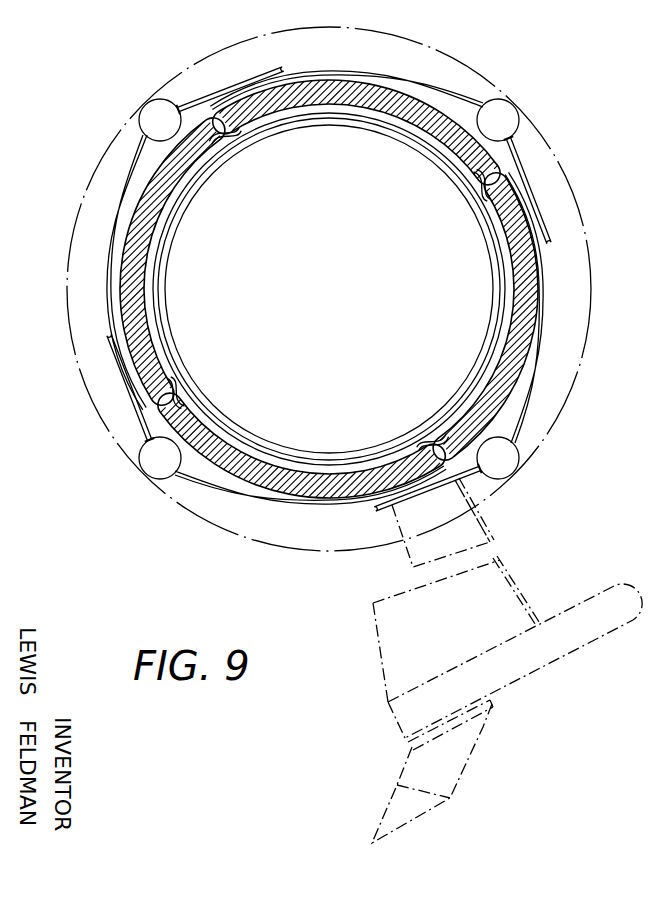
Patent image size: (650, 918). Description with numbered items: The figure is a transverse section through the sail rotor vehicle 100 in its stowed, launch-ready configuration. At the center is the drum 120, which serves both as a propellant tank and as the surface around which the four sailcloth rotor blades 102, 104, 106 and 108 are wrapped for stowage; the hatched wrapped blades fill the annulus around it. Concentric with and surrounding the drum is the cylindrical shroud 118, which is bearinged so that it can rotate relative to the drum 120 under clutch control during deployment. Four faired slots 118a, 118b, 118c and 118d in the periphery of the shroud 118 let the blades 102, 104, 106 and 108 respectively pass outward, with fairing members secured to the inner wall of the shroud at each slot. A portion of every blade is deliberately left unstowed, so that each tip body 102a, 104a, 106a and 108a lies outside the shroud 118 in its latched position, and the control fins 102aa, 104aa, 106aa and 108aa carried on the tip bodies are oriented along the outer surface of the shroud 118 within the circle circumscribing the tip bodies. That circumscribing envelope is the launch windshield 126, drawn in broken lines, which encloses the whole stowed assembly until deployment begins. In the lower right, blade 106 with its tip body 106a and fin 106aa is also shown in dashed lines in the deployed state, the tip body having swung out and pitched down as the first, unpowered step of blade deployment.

The sail rotor vehicle 100 is at (562, 135).
The rotor blade 102 is at (452, 96).
The tip body 102a is at (505, 113).
The control fin 102aa is at (537, 208).
The rotor blade 104 is at (533, 393).
The tip body 104a is at (503, 460).
The control fin 104aa is at (388, 504).
The rotor blade 106 is at (200, 490).
The tip body 106a is at (150, 463).
The control fin 106aa is at (122, 372).
The rotor blade 108 is at (118, 180).
The tip body 108a is at (152, 117).
The control fin 108aa is at (213, 98).
The shroud 118 is at (532, 303).
The slot 118a is at (237, 133).
The slot 118b is at (478, 187).
The slot 118c is at (421, 434).
The slot 118d is at (175, 380).
The drum 120 is at (422, 321).
The windshield 126 is at (592, 255).